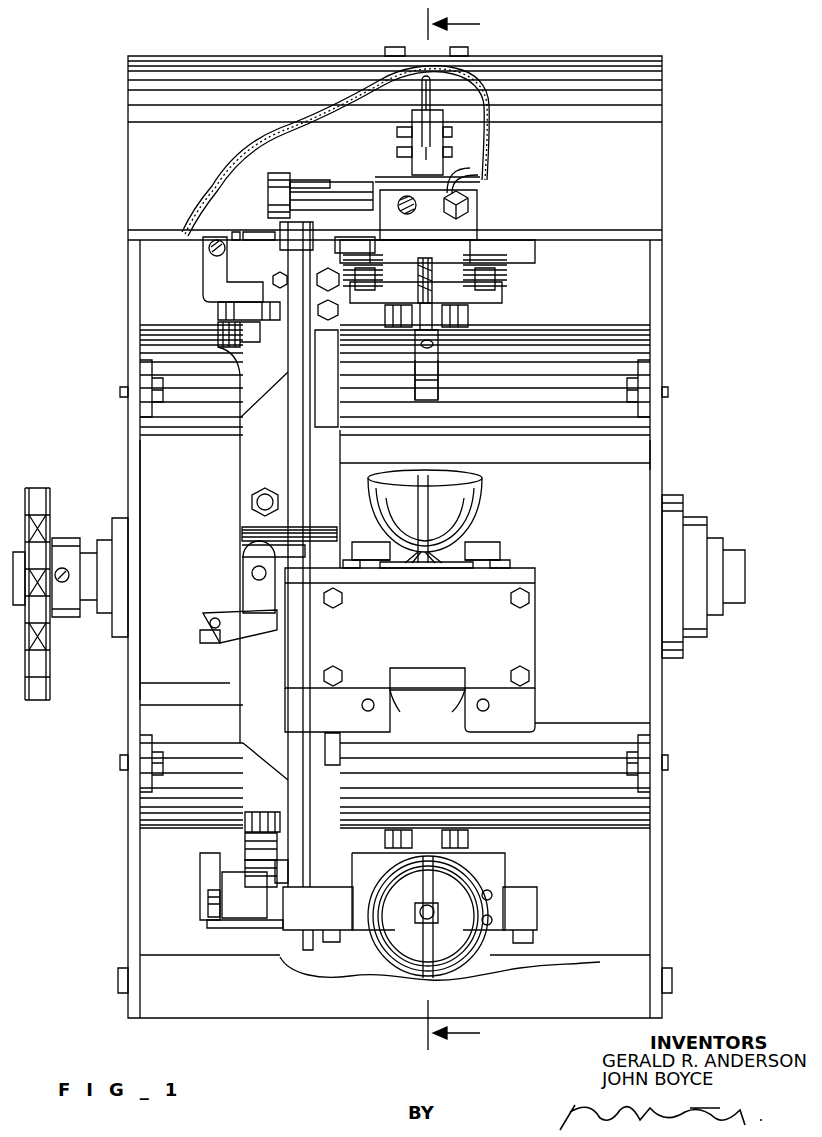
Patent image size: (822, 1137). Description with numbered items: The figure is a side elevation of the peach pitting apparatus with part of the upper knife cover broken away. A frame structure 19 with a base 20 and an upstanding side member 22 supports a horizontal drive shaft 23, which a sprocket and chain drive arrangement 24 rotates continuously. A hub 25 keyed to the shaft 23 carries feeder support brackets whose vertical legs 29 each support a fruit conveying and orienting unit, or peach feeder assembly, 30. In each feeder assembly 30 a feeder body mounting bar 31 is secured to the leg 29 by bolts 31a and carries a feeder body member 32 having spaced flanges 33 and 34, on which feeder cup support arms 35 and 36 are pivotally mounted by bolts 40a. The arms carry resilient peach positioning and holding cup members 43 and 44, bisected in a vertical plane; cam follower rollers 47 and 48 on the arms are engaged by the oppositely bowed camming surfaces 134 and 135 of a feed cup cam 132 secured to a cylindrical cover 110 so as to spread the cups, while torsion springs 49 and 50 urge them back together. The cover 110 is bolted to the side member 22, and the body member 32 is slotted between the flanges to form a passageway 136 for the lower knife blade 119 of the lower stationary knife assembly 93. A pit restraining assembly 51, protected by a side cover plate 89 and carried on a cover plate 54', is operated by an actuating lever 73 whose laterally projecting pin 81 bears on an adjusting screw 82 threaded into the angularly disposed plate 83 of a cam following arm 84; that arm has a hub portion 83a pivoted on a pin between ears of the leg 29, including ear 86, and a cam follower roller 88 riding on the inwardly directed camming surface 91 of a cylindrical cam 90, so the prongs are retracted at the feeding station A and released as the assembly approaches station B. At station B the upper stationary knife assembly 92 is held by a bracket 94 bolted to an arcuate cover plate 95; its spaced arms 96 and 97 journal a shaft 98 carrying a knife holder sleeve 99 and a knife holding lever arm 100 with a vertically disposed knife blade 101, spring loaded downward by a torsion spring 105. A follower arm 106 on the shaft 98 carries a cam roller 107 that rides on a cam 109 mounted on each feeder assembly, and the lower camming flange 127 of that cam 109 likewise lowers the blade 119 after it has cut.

The frame structure 19 is at (674, 108).
The base 20 is at (222, 991).
The side member 22 is at (662, 449).
The drive shaft 23 is at (86, 558).
The sprocket and chain drive arrangement 24 is at (48, 508).
The hub 25 is at (307, 535).
The vertical leg 29 is at (296, 475).
The fruit conveying and orienting unit 30 is at (548, 255).
The feeder body mounting bar 31 is at (326, 294).
The bolts 31a is at (276, 275).
The feeder body member 32 is at (400, 703).
The flange 33 is at (503, 728).
The flange 34 is at (326, 728).
The feeder cup support arm 35 is at (500, 547).
The feeder cup support arm 36 is at (360, 546).
The bolt 40a is at (368, 698).
The peach positioning and holding cup member 43 is at (462, 491).
The peach positioning and holding cup member 44 is at (382, 485).
The cam follower roller 47 is at (460, 318).
The cam follower roller 48 is at (386, 319).
The torsion spring 49 is at (505, 283).
The torsion spring 50 is at (362, 253).
The pit restraining assembly 51 is at (437, 911).
The cover plate 54' is at (440, 756).
The actuating lever 73 is at (265, 236).
The laterally projecting pin 81 is at (234, 236).
The adjusting screw 82 is at (205, 244).
The angularly disposed plate 83 is at (215, 275).
The hub portion 83a is at (258, 867).
The cam following arm 84 is at (255, 591).
The laterally projecting ear 86 is at (270, 885).
The cam follower roller 88 is at (236, 336).
The side cover plate 89 is at (415, 616).
The cylindrical cam 90 is at (172, 498).
The camming surface 91 is at (246, 438).
The upper stationary knife assembly 92 is at (437, 102).
The lower stationary knife assembly 93 is at (420, 303).
The bracket 94 is at (395, 239).
The arcuate cover plate 95 is at (268, 85).
The arm 96 is at (376, 182).
The arm 97 is at (475, 240).
The shaft 98 is at (368, 193).
The knife holder sleeve 99 is at (466, 170).
The knife holding lever arm 100 is at (440, 167).
The knife blade 101 is at (424, 103).
The torsion spring 105 is at (456, 166).
The follower arm 106 is at (280, 185).
The cam roller 107 is at (302, 181).
The cam 109 is at (320, 426).
The cylindrical cover 110 is at (583, 459).
The knife blade 119 is at (434, 298).
The lower camming flange 127 is at (333, 409).
The feed cup cam 132 is at (426, 400).
The camming surface 134 is at (437, 366).
The camming surface 135 is at (414, 366).
The passageway 136 is at (408, 723).
The feeding station A is at (460, 467).
The station B is at (510, 301).